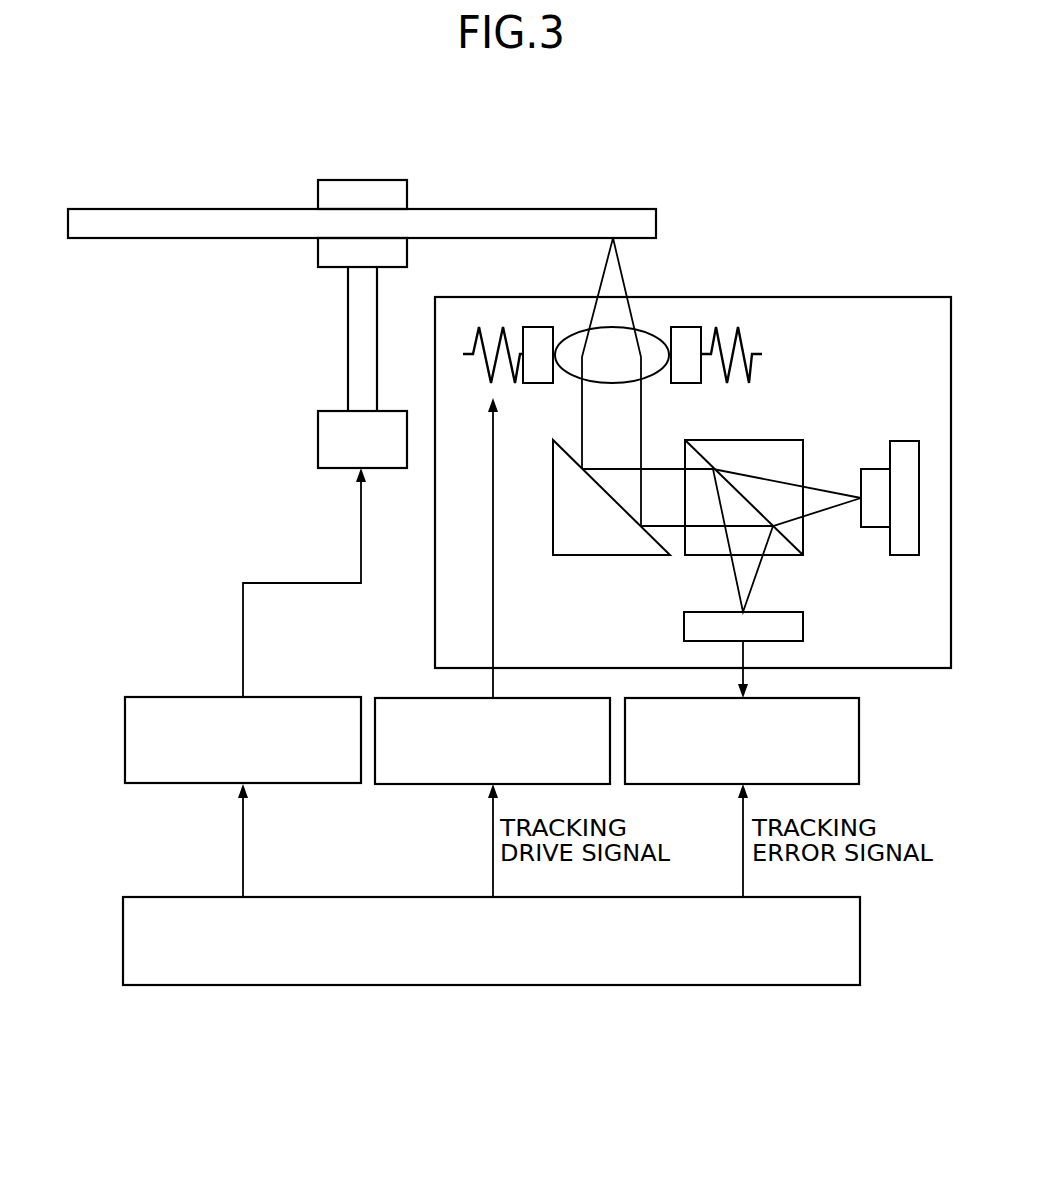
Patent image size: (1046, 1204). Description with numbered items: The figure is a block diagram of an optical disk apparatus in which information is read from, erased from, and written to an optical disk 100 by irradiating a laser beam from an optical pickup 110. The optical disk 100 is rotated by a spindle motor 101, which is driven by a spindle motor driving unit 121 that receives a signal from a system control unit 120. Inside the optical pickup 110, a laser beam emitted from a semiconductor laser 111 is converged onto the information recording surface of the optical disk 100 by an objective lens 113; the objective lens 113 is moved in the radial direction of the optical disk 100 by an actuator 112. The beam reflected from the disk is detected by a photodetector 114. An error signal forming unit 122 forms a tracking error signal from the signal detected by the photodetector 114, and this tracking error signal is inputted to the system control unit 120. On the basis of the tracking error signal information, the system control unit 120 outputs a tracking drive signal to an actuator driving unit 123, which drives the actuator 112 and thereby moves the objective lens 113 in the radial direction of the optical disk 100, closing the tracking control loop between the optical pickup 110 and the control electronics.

The optical disk 100 is at (185, 240).
The spindle motor 101 is at (318, 440).
The optical pickup 110 is at (919, 295).
The semiconductor laser 111 is at (905, 556).
The actuator 112 is at (752, 336).
The objective lens 113 is at (652, 338).
The photodetector 114 is at (684, 625).
The system control unit 120 is at (488, 987).
The spindle motor driving unit 121 is at (124, 740).
The error signal forming unit 122 is at (862, 740).
The actuator driving unit 123 is at (418, 786).